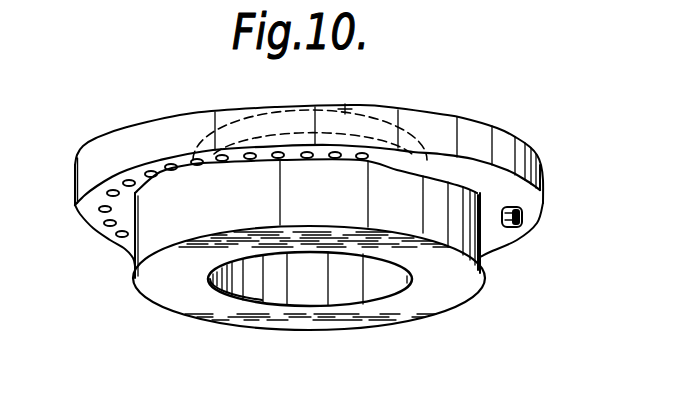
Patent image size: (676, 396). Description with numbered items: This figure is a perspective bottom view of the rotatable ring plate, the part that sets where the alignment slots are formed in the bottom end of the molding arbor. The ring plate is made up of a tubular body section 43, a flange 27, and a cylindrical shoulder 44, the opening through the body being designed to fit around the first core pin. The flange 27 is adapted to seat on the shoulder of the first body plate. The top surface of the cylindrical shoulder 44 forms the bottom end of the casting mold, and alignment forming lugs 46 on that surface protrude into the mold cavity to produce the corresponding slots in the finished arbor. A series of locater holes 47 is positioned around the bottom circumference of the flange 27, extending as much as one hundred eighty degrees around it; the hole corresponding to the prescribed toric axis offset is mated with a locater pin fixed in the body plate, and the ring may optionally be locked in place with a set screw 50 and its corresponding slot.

The flange 27 is at (520, 197).
The tubular body section 43 is at (155, 252).
The cylindrical shoulder 44 is at (412, 110).
The alignment forming lugs 46 is at (348, 106).
The locater holes 47 is at (100, 211).
The set screw 50 is at (523, 219).